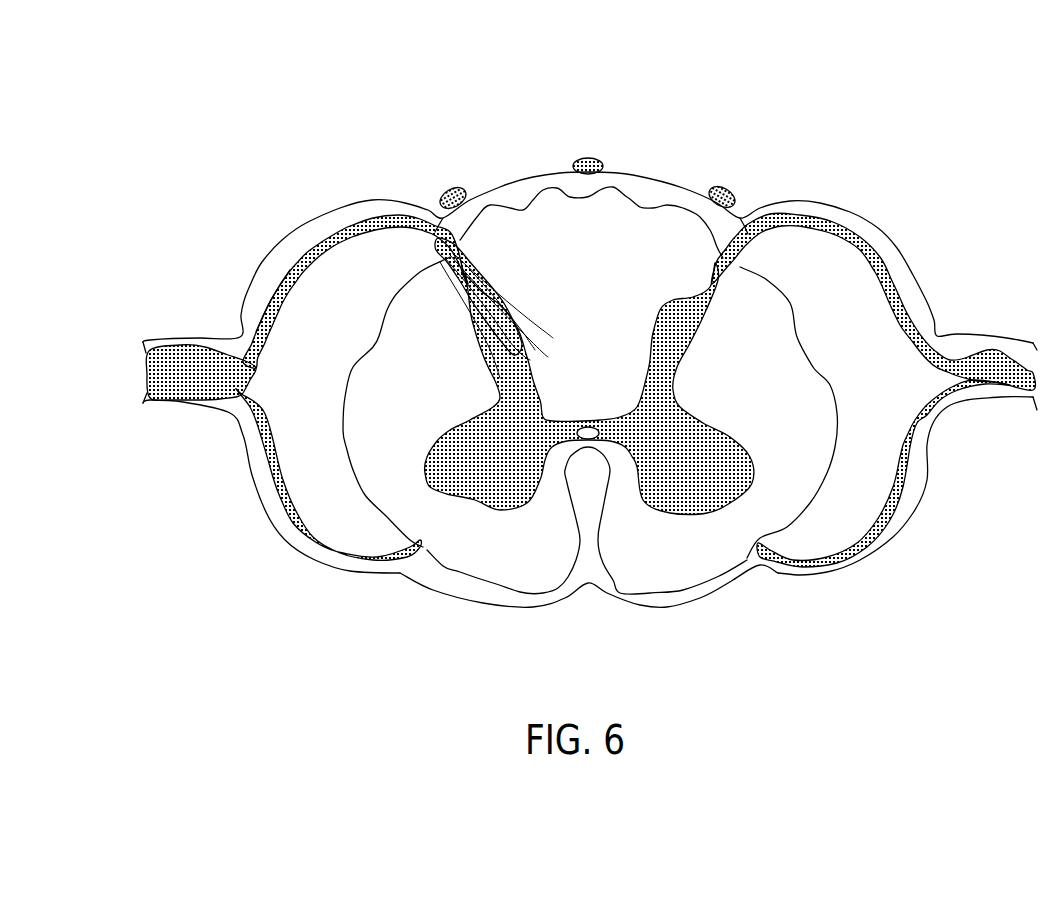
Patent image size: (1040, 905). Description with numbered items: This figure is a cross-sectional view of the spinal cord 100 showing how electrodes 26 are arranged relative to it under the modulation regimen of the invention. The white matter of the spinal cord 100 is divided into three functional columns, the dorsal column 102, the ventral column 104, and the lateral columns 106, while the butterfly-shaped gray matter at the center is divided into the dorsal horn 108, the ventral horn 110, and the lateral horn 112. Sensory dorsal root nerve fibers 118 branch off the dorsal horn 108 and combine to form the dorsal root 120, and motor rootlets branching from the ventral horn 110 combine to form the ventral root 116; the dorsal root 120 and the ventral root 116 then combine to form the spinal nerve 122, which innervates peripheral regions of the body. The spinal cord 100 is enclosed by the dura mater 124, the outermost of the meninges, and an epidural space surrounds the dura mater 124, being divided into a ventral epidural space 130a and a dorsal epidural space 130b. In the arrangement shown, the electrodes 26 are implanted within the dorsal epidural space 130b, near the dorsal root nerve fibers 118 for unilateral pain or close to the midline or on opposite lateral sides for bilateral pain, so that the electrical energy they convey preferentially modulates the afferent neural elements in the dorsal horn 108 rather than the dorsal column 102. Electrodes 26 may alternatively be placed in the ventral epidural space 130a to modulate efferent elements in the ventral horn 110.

The spinal cord 100 is at (652, 82).
The electrode 26 is at (452, 187).
The dorsal column 102 is at (573, 253).
The ventral column 104 is at (493, 555).
The lateral column 106 is at (387, 368).
The dorsal horn 108 is at (520, 320).
The ventral horn 110 is at (420, 470).
The lateral horn 112 is at (493, 403).
The ventral root 116 is at (283, 493).
The dorsal root nerve fibers 118 is at (375, 212).
The dorsal root 120 is at (264, 333).
The spinal nerve 122 is at (180, 378).
The dura mater 124 is at (533, 607).
The ventral epidural space 130a is at (420, 556).
The dorsal epidural space 130b is at (497, 204).